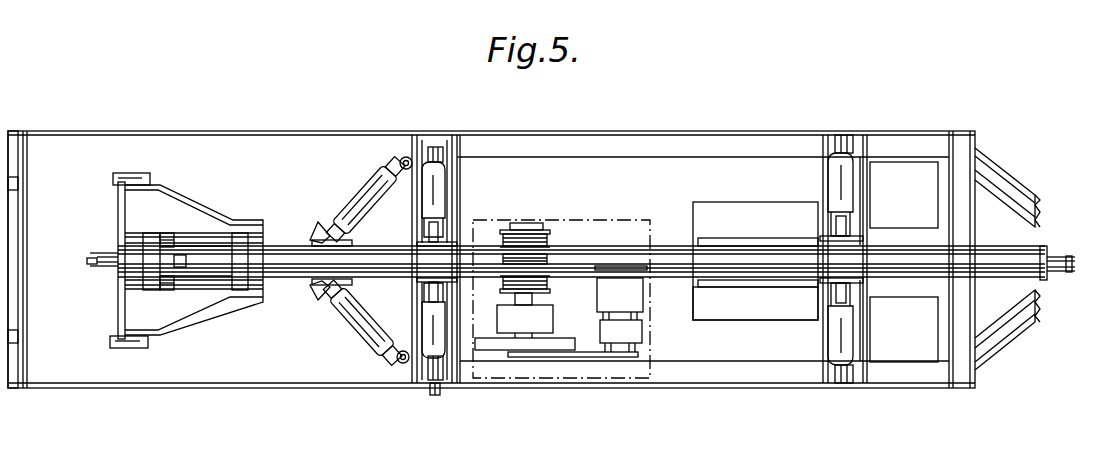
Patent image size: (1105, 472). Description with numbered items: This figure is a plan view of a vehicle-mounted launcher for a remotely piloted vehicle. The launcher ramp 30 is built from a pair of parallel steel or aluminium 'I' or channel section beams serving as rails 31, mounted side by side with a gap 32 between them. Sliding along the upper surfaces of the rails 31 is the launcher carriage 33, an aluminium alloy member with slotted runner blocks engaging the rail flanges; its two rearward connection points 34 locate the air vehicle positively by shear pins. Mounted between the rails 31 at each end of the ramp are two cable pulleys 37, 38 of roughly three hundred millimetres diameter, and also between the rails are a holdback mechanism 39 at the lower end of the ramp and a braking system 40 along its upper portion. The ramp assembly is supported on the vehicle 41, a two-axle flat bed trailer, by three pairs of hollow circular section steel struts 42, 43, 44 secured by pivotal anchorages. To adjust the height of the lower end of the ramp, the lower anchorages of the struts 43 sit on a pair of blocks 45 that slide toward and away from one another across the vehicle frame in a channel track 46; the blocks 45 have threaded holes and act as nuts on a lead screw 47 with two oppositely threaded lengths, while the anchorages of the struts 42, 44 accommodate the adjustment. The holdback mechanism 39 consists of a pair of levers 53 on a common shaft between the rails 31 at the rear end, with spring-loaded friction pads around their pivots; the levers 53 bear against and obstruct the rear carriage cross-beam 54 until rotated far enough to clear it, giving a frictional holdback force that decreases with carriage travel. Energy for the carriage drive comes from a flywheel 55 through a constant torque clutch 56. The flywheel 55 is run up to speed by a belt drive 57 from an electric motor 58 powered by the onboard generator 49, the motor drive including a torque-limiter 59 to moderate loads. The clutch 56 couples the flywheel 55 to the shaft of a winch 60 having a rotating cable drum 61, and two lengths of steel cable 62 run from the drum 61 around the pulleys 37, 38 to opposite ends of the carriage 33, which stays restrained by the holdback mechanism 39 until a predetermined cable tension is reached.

The launcher ramp 30 is at (372, 290).
The rails 31 is at (696, 251).
The gap 32 is at (702, 268).
The launcher carriage 33 is at (210, 225).
The rearward connection points 34 is at (113, 180).
The cable pulley 37 is at (93, 268).
The cable pulley 38 is at (1070, 273).
The holdback mechanism 39 is at (182, 262).
The braking system 40 is at (790, 245).
The vehicle 41 is at (163, 374).
The pair of struts 42 is at (367, 196).
The pair of struts 43 is at (450, 183).
The pair of struts 44 is at (840, 203).
The blocks 45 is at (418, 146).
The channel track 46 is at (461, 193).
The lead screw 47 is at (438, 396).
The generator 49 is at (783, 307).
The levers 53 is at (165, 287).
The rear carriage cross-beam 54 is at (183, 245).
The flywheel 55 is at (565, 351).
The constant torque clutch 56 is at (540, 322).
The belt drive 57 is at (597, 358).
The electric motor 58 is at (620, 290).
The torque-limiter 59 is at (645, 333).
The winch 60 is at (540, 230).
The cable drum 61 is at (550, 240).
The steel cable 62 is at (738, 262).